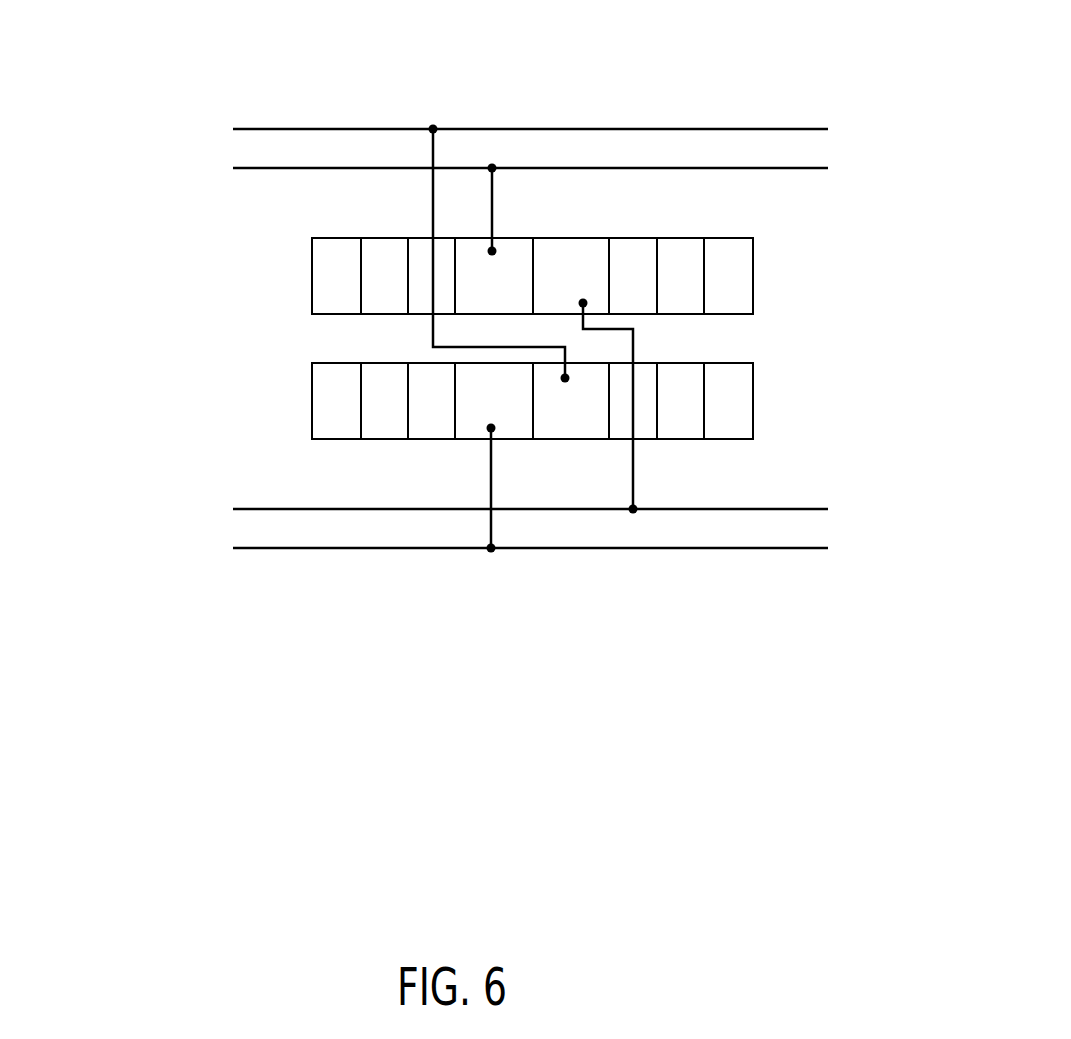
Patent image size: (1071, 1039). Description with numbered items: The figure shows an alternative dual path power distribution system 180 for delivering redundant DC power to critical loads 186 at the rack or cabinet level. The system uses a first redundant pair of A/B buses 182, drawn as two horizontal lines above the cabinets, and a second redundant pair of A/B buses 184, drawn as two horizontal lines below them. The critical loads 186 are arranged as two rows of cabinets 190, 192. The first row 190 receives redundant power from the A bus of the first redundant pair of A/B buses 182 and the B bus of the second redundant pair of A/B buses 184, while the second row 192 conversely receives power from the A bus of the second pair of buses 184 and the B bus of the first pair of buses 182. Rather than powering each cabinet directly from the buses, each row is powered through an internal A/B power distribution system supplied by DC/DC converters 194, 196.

The dual path power distribution system 180 is at (678, 64).
The first redundant pair of A/B buses 182 is at (132, 140).
The second redundant pair of A/B buses 184 is at (147, 527).
The critical loads 186 is at (795, 352).
The first row of cabinets 190 is at (392, 245).
The second row of cabinets 192 is at (390, 437).
The DC/DC converter 194 is at (508, 243).
The DC/DC converter 196 is at (588, 245).